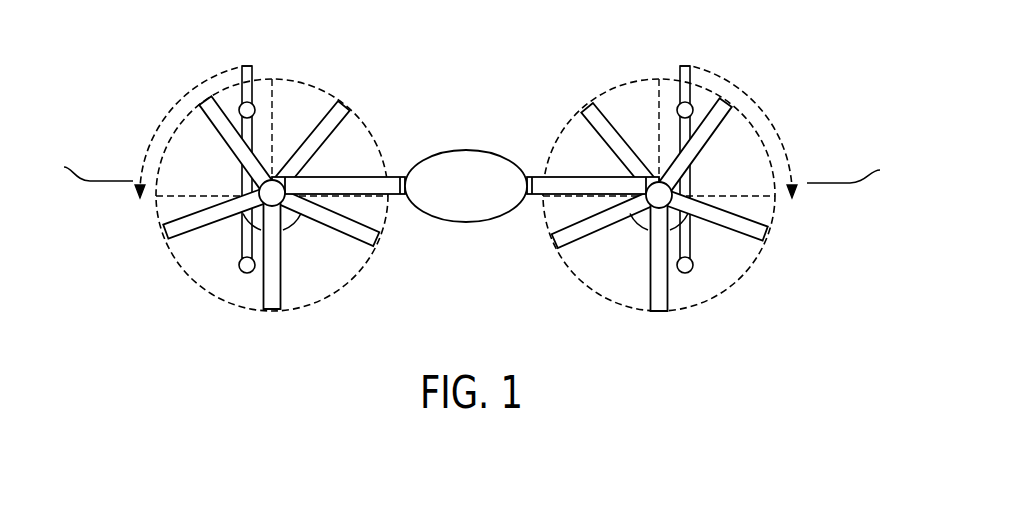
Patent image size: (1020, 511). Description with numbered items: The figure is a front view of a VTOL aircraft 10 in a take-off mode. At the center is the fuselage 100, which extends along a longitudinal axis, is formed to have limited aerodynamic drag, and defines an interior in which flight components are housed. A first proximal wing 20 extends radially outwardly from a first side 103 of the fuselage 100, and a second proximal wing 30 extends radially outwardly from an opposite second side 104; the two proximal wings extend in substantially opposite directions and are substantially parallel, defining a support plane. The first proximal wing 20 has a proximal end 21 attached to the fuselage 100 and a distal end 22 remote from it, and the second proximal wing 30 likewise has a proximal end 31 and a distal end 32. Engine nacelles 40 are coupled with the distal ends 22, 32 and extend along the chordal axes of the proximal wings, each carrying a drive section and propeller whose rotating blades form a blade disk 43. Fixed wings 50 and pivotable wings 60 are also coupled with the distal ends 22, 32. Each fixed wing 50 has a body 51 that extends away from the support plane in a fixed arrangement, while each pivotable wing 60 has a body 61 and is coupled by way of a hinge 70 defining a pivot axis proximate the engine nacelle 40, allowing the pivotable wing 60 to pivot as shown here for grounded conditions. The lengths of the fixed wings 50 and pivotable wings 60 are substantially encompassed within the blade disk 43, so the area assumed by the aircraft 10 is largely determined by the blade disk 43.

The VTOL aircraft 10 is at (528, 104).
The first proximal wing 20 is at (396, 195).
The proximal end of first proximal wing 21 is at (403, 186).
The distal end of first proximal wing 22 is at (367, 191).
The second proximal wing 30 is at (531, 178).
The proximal end of second proximal wing 31 is at (536, 199).
The distal end of second proximal wing 32 is at (598, 188).
The engine nacelle 40 is at (295, 221).
The blade disk 43 is at (601, 306).
The fixed wing 50 is at (243, 271).
The body of fixed wing 51 is at (243, 232).
The pivotable wing 60 is at (246, 66).
The body of pivotable wing 61 is at (236, 70).
The hinge 70 is at (468, 179).
The fuselage 100 is at (467, 192).
The first side of fuselage 103 is at (450, 172).
The second side of fuselage 104 is at (490, 205).